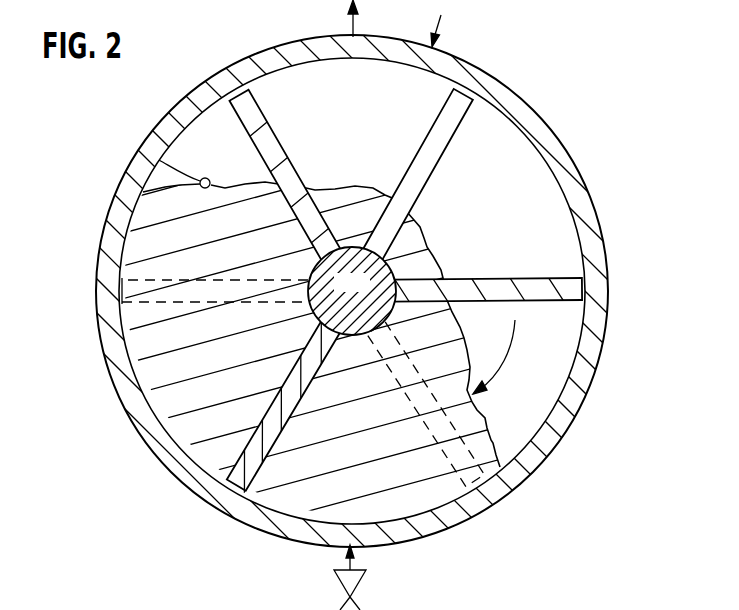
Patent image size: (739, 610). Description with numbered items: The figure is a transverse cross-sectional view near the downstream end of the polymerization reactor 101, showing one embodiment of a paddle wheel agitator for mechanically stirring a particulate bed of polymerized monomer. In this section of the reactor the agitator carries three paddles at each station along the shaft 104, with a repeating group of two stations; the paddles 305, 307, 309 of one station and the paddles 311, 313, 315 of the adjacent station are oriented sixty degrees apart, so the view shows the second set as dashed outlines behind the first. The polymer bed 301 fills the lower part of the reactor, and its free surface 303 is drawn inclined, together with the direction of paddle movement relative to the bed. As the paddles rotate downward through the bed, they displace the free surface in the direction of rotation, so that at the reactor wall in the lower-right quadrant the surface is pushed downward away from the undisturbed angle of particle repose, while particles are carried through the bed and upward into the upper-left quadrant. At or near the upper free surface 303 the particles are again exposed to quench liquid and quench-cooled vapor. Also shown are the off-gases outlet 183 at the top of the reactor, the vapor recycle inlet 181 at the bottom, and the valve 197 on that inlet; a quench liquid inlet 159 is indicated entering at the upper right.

The reactor 101 is at (218, 75).
The shaft 104 is at (367, 295).
The feed inlet 159 is at (441, 15).
The vapor recycle inlet 181 is at (350, 566).
The off-gases outlet 183 is at (350, 25).
The valve 197 is at (368, 606).
The polymer bed 301 is at (492, 430).
The free surface 303 is at (205, 178).
The paddle 305 is at (224, 108).
The paddle 307 is at (560, 278).
The paddle 309 is at (242, 460).
The paddle 311 is at (115, 282).
The paddle 313 is at (456, 125).
The paddle 315 is at (500, 490).